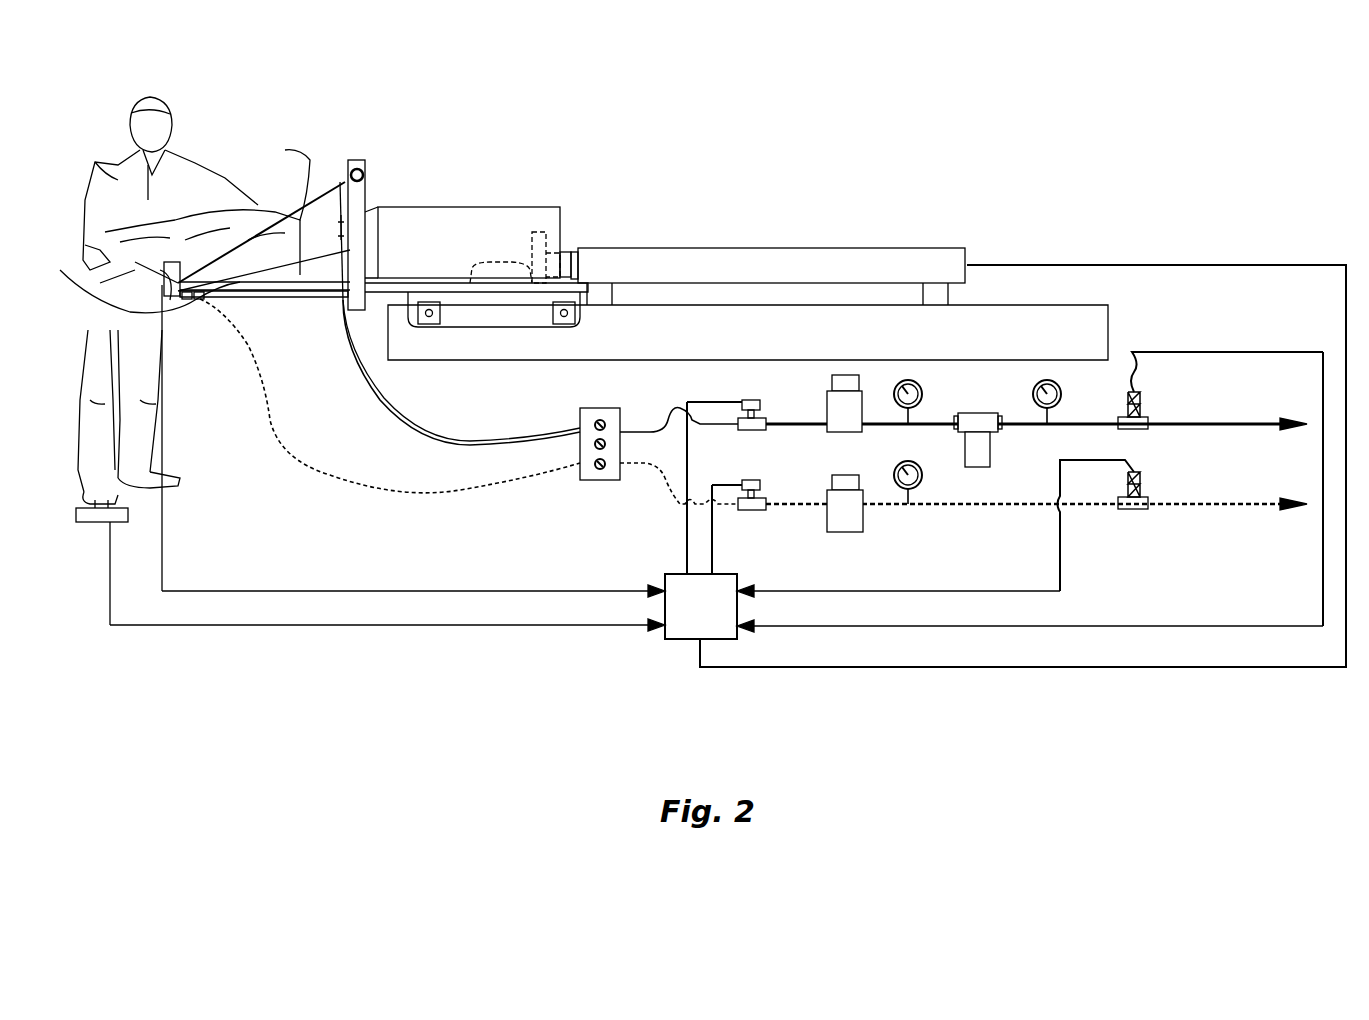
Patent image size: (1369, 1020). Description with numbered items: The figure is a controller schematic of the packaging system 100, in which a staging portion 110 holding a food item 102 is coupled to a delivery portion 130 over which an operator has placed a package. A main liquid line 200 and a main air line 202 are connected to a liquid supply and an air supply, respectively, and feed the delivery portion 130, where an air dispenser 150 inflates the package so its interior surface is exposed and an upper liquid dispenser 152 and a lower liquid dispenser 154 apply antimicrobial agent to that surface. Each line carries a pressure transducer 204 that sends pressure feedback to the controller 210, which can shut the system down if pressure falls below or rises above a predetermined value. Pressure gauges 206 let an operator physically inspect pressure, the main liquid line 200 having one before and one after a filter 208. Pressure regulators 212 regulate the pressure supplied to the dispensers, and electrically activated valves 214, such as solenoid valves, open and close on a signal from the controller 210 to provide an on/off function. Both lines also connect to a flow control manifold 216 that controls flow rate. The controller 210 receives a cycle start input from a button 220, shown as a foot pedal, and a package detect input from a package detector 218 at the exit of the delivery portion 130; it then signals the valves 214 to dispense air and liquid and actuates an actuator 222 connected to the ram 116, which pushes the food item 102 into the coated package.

The packaging system 100 is at (752, 96).
The food item 102 is at (500, 262).
The staging portion 110 is at (413, 190).
The ram 116 is at (540, 232).
The delivery portion 130 is at (232, 204).
The air dispenser 150 is at (190, 302).
The upper liquid dispenser 152 is at (308, 160).
The lower liquid dispenser 154 is at (195, 298).
The main liquid line 200 is at (1228, 425).
The main air line 202 is at (1228, 506).
The pressure transducer 204 is at (1140, 404).
The pressure gauge 206 is at (922, 390).
The filter 208 is at (994, 445).
The controller 210 is at (690, 640).
The pressure regulator 212 is at (830, 386).
The electrically activated valve 214 is at (750, 400).
The flow control manifold 216 is at (590, 408).
The package detector 218 is at (100, 283).
The button 220 is at (96, 526).
The actuator 222 is at (983, 248).